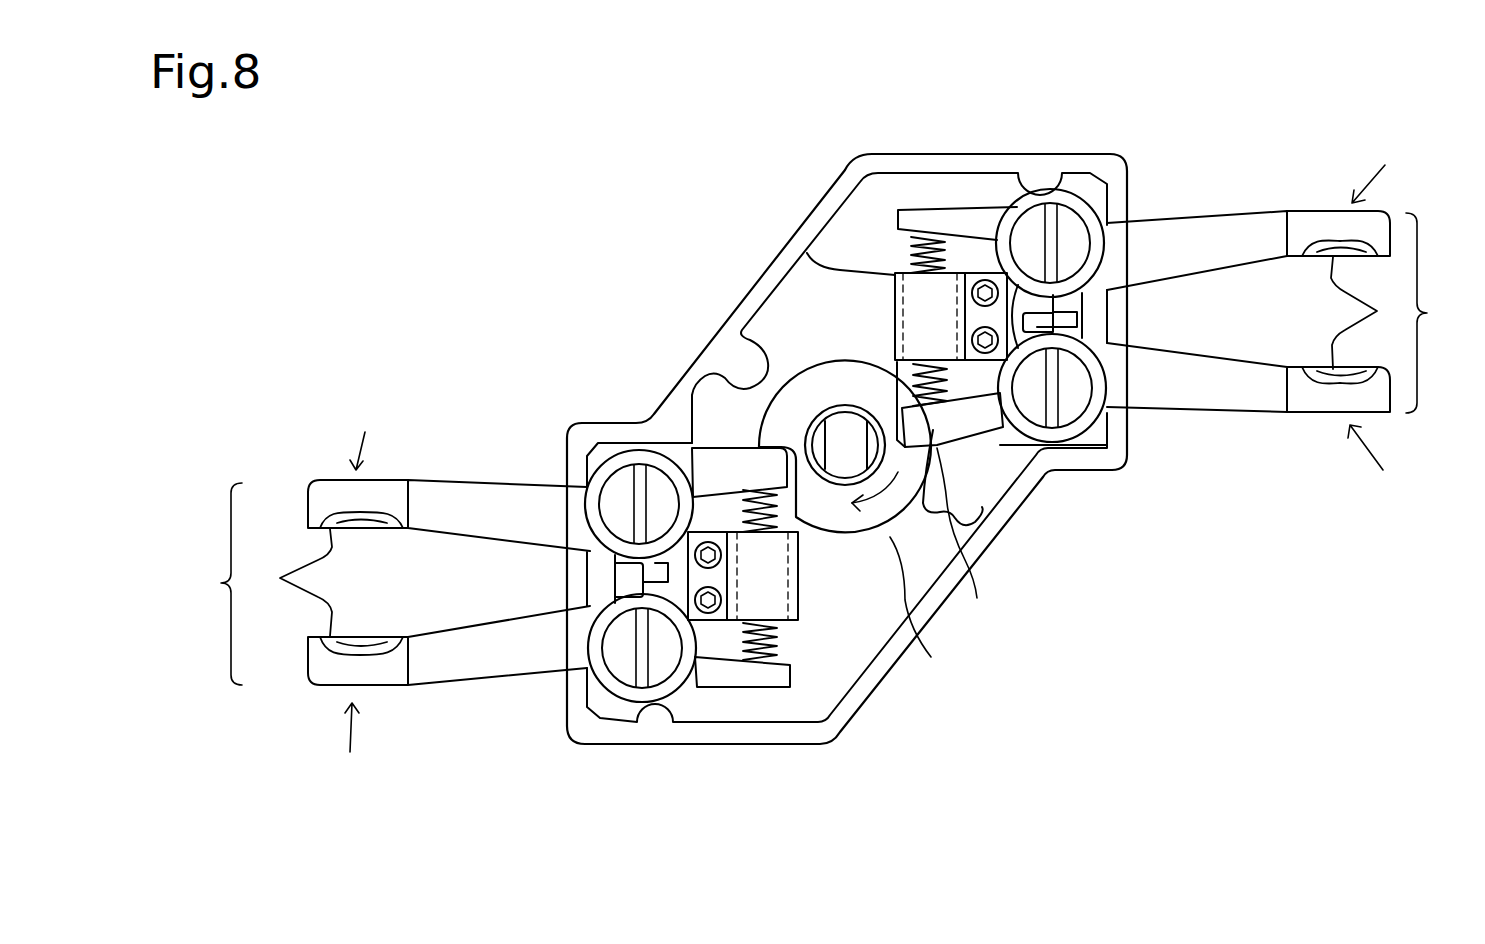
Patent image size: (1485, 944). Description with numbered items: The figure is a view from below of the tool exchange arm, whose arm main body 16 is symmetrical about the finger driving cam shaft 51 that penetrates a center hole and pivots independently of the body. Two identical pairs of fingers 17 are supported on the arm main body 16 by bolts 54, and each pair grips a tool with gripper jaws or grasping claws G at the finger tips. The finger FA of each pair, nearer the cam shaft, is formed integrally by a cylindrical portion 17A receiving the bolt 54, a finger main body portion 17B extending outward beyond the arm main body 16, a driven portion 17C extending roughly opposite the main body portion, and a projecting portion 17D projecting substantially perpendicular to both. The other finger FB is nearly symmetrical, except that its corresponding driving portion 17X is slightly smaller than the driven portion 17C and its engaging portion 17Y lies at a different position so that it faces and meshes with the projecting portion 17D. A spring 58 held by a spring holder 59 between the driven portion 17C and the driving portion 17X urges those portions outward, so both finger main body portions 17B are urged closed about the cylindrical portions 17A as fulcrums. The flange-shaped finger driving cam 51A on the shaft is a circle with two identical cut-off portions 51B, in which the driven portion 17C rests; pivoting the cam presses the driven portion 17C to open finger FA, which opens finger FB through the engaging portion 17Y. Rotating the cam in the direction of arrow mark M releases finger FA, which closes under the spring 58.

The arm main body 16 is at (988, 543).
The pair of fingers 17 is at (825, 449).
The cylindrical portion 17A is at (1095, 207).
The finger main body portion 17B is at (1260, 210).
The driven portion 17C is at (1005, 515).
The projecting portion 17D is at (1082, 325).
The corresponding driving portion 17X is at (935, 208).
The engaging portion 17Y is at (1082, 315).
The finger driving cam shaft 51 is at (859, 557).
The finger driving cam 51A is at (939, 608).
The cut-off portion 51B is at (984, 545).
The bolt 54 is at (1075, 200).
The spring 58 is at (898, 370).
The spring holder 59 is at (807, 253).
The finger FA is at (887, 453).
The finger FB is at (876, 461).
The gripper jaw or grasping claw G is at (827, 446).
The arrow mark M is at (858, 498).